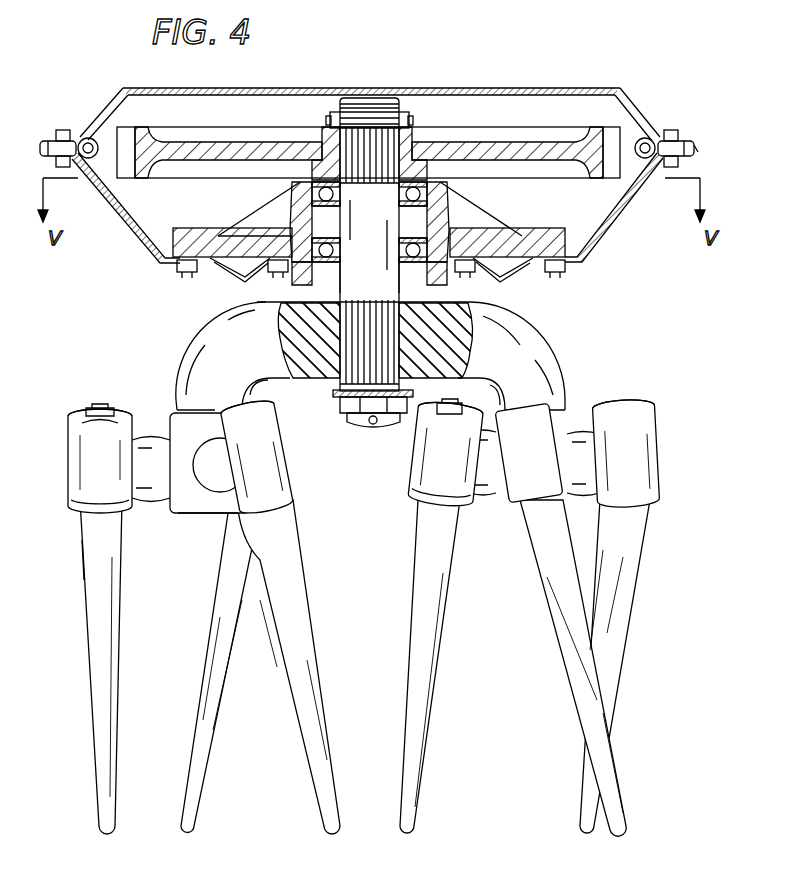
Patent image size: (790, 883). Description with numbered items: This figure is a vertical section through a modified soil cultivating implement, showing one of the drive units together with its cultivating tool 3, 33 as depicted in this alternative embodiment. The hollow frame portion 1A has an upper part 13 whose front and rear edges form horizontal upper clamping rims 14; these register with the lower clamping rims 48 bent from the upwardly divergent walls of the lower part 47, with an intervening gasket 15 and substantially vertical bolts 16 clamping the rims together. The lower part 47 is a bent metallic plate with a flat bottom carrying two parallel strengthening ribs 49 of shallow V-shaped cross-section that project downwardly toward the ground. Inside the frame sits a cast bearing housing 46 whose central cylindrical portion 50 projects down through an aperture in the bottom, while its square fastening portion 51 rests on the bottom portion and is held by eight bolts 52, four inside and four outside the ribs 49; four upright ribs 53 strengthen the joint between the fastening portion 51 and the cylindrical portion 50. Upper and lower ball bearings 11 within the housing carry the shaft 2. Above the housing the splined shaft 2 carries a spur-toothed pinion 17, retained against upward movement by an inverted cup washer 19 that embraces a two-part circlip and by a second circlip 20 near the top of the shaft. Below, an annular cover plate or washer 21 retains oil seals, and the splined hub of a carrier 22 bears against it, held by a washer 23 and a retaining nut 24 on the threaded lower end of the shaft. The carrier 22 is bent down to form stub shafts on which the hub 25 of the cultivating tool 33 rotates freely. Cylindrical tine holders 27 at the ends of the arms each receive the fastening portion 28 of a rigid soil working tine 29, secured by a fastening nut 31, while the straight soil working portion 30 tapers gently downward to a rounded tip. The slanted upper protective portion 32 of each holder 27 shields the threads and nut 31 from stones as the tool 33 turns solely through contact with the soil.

The hollow frame portion 1A is at (240, 120).
The shaft 2 is at (368, 100).
The cutter assembly 3 is at (364, 546).
The ball bearing 11 is at (345, 198).
The upper part 13 is at (518, 88).
The upper clamping rim 14 is at (688, 140).
The gasket 15 is at (40, 149).
The bolt 16 is at (62, 130).
The pinion 17 is at (500, 140).
The cup washer 19 is at (326, 120).
The second circlip 20 is at (409, 118).
The cover plate or washer 21 is at (330, 306).
The carrier 22 is at (338, 388).
The washer 23 is at (348, 416).
The retaining nut 24 is at (385, 430).
The hub 25 is at (174, 414).
The tine holder 27 is at (68, 446).
The fastening portion 28 is at (98, 406).
The soil working tine 29 is at (76, 596).
The soil working portion 30 is at (98, 726).
The fastening nut 31 is at (110, 412).
The upper protective portion 32 is at (630, 405).
The cultivating tool 33 is at (194, 518).
The bearing housing 46 is at (288, 194).
The lower part 47 is at (140, 245).
The lower clamping rim 48 is at (660, 180).
The strengthening rib 49 is at (250, 248).
The cylindrical portion 50 is at (440, 288).
The fastening portion 51 is at (230, 230).
The bolt 52 is at (192, 274).
The upright rib 53 is at (500, 212).